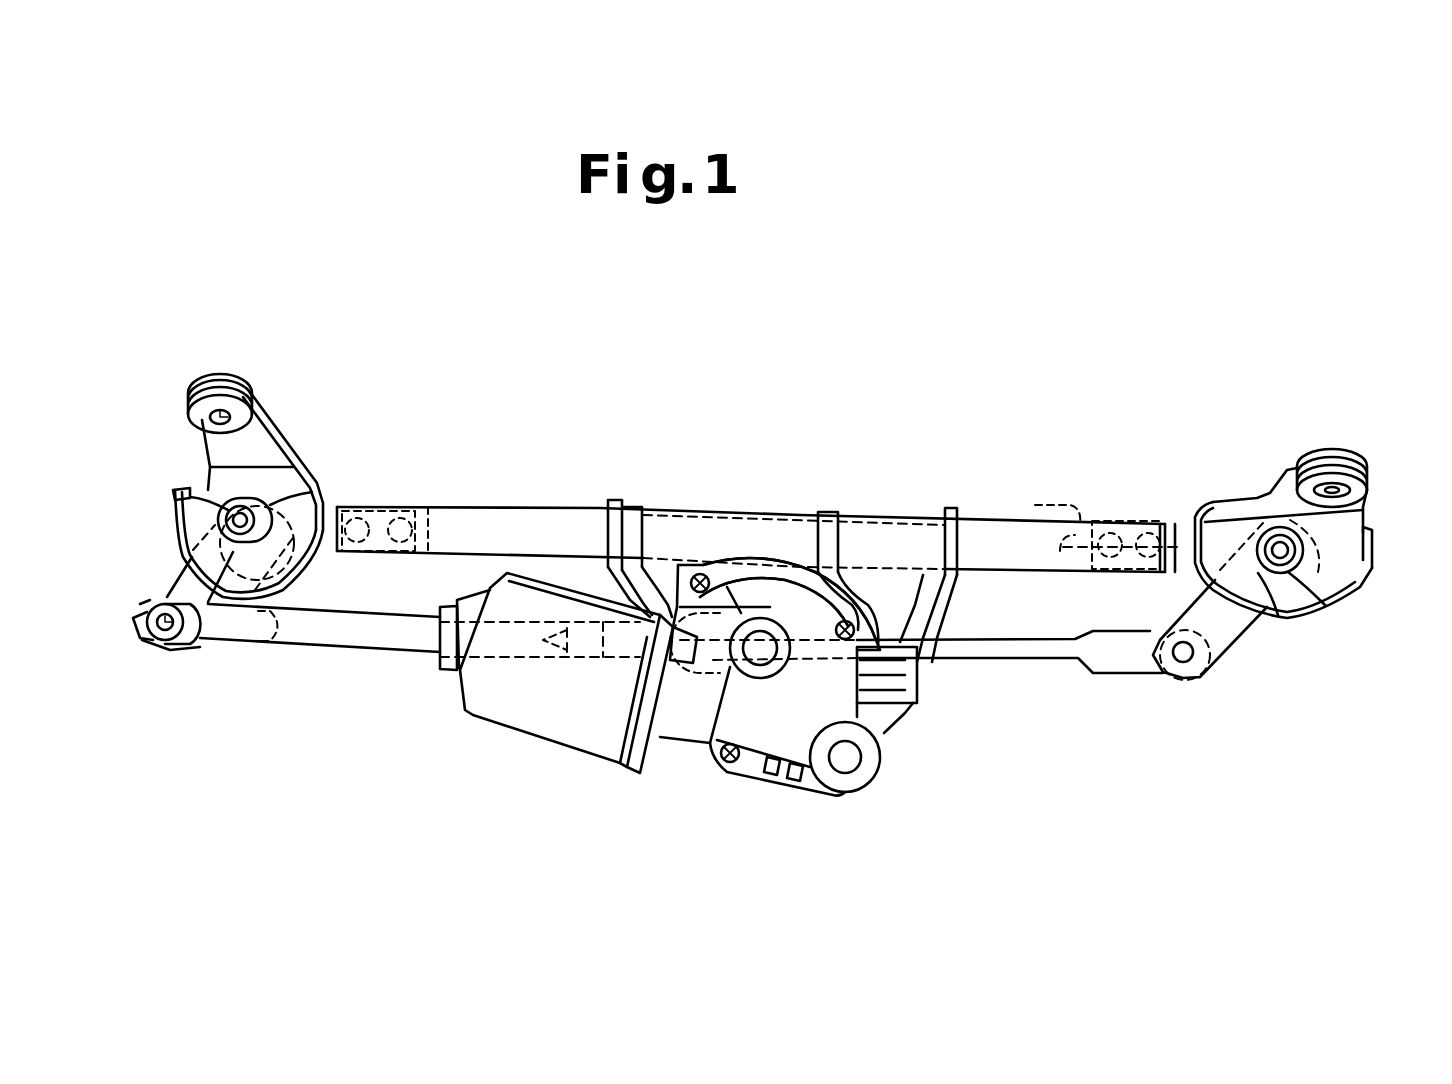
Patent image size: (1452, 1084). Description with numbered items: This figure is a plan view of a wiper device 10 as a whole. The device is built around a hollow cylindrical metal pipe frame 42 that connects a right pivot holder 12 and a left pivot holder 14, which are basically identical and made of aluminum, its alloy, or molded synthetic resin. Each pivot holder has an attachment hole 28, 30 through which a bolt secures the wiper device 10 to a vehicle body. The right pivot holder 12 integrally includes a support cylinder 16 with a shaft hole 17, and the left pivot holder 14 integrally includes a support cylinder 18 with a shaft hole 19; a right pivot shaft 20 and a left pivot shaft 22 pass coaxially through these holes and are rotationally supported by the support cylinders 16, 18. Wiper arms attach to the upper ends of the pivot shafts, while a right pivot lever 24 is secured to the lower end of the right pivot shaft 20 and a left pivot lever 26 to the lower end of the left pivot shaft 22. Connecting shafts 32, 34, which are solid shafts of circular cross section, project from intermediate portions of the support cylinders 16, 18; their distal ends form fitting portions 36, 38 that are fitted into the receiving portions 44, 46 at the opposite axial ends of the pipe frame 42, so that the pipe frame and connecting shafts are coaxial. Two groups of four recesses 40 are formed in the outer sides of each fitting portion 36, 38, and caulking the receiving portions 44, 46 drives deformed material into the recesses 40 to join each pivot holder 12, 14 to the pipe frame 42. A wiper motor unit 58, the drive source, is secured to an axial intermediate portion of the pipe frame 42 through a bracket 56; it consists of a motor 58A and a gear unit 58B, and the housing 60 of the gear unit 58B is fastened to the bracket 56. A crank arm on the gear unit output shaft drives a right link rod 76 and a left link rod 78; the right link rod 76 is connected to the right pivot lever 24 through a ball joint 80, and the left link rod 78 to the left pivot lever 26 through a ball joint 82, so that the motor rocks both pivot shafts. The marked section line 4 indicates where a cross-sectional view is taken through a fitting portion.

The wiper device 10 is at (657, 423).
The right pivot holder 12 is at (1314, 530).
The left pivot holder 14 is at (228, 459).
The support cylinder 16 is at (1337, 593).
The shaft hole 17 is at (1305, 590).
The support cylinder 18 is at (175, 503).
The shaft hole 19 is at (273, 497).
The right pivot shaft 20 is at (1273, 593).
The left pivot shaft 22 is at (232, 522).
The right pivot lever 24 is at (1210, 655).
The left pivot lever 26 is at (178, 590).
The attachment hole 28 is at (1320, 487).
The attachment hole 30 is at (233, 395).
The connecting shaft 32 is at (1198, 510).
The connecting shaft 34 is at (333, 513).
The fitting portion 36 is at (1035, 516).
The fitting portion 38 is at (432, 507).
The recess 40 is at (370, 547).
The pipe frame 42 is at (537, 507).
The receiving portion 44 is at (1148, 617).
The receiving portion 46 is at (347, 503).
The bracket 56 is at (878, 578).
The wiper motor unit 58 is at (678, 736).
The motor 58A is at (596, 768).
The gear unit 58B is at (786, 707).
The housing 60 is at (757, 573).
The right link rod 76 is at (1013, 660).
The left link rod 78 is at (363, 653).
The ball joint 80 is at (1183, 673).
The ball joint 82 is at (160, 632).
The section line 4- 4 is at (1115, 613).